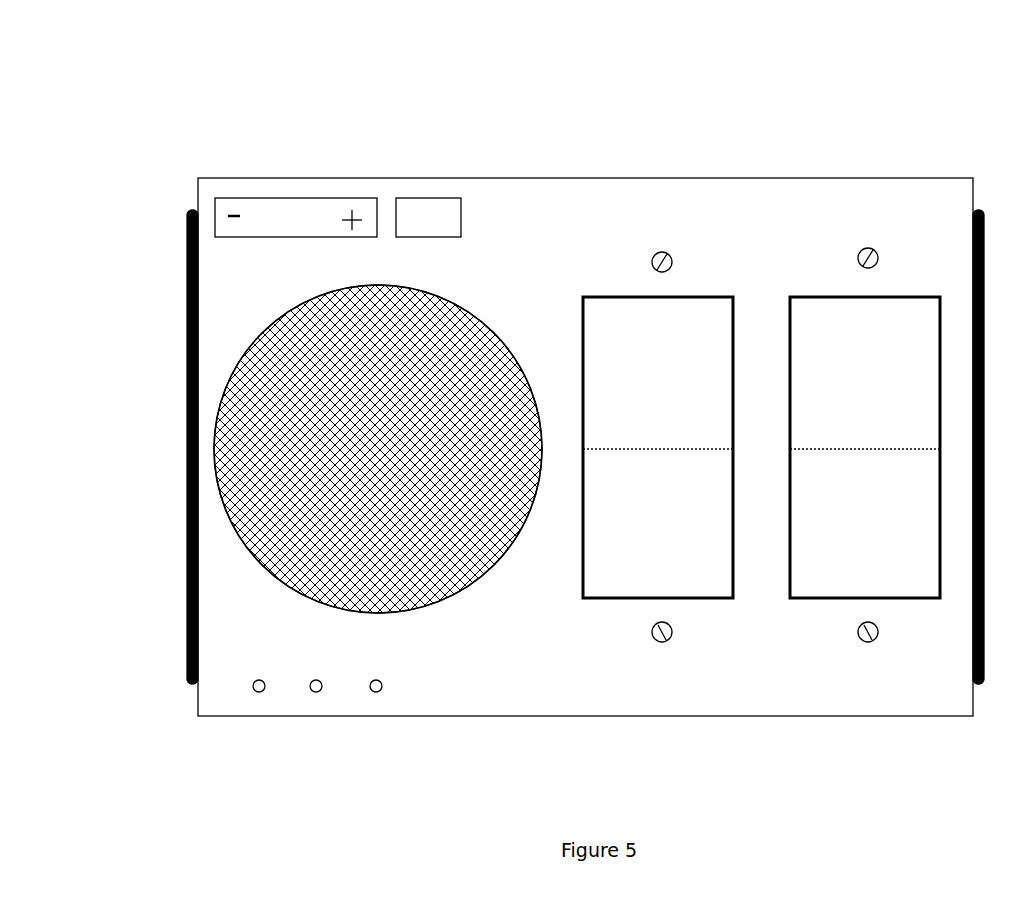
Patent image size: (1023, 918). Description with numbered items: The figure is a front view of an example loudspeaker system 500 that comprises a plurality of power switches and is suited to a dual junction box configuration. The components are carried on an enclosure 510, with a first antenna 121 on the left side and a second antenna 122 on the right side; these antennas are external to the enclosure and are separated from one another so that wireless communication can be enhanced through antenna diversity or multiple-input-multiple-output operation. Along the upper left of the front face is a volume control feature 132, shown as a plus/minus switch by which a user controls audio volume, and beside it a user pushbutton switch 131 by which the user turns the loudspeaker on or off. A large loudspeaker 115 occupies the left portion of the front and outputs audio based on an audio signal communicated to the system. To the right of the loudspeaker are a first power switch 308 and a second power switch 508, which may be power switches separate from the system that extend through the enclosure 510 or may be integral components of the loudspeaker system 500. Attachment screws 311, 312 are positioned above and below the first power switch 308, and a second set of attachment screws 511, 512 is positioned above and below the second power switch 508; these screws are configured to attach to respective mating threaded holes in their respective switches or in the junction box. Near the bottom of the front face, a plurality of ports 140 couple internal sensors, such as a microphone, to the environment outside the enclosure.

The loudspeaker system 500 is at (128, 92).
The enclosure 510 is at (598, 178).
The first antenna 121 is at (188, 232).
The second antenna 122 is at (972, 233).
The volume control feature 132 is at (297, 196).
The user pushbutton switch 131 is at (430, 196).
The loudspeaker 115 is at (303, 300).
The first power switch 308 is at (583, 323).
The second power switch 508 is at (790, 323).
The attachment screw 311 is at (674, 260).
The attachment screw 511 is at (880, 257).
The attachment screw 312 is at (672, 637).
The attachment screw 512 is at (878, 637).
The ports 140 is at (259, 693).